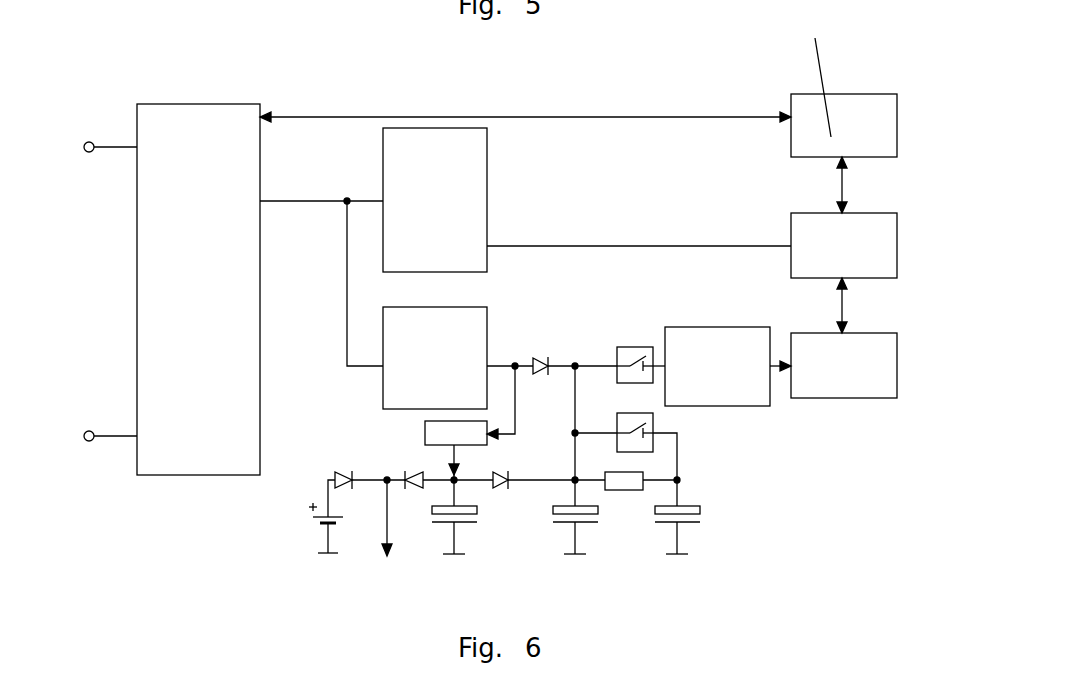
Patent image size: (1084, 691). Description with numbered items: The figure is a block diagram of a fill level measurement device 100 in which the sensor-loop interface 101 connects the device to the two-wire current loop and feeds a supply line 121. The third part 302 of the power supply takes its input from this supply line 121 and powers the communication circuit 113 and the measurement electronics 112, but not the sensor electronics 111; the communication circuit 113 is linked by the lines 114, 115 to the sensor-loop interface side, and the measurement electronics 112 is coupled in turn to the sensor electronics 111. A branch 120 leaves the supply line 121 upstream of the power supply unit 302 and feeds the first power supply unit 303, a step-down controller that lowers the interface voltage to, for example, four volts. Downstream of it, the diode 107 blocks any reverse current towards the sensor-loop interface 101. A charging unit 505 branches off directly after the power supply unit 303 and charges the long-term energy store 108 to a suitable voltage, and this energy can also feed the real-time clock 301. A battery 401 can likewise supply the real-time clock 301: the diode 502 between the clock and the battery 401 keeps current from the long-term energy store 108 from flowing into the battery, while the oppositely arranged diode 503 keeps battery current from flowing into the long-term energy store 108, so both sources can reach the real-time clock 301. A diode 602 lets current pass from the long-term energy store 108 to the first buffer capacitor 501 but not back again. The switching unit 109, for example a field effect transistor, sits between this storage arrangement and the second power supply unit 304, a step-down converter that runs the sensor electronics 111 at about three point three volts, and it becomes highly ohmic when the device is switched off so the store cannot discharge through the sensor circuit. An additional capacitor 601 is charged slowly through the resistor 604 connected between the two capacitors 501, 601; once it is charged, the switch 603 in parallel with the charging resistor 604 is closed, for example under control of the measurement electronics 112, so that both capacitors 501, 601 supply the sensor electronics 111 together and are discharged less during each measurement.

The sensor device 100 is at (724, 78).
The sensor-loop interface 101 is at (230, 467).
The diode 107 is at (548, 352).
The long-term energy store 108 is at (477, 510).
The switching unit 109 is at (637, 343).
The sensor electronics 111 is at (848, 393).
The measurement electronics 112 is at (800, 220).
The communication circuit 113 is at (848, 100).
The line 114 is at (525, 87).
The line 115 is at (305, 117).
The branch 120 is at (340, 288).
The supply line 121 is at (268, 201).
The real-time clock 301 is at (357, 572).
The third part of the power supply 302 is at (480, 162).
The first power supply unit 303 is at (480, 332).
The second power supply unit 304 is at (758, 400).
The battery 401 is at (322, 538).
The buffer capacitor 501 is at (600, 512).
The diode 502 is at (343, 472).
The diode 503 is at (403, 472).
The charging unit 505 is at (482, 440).
The additional capacitor 601 is at (700, 512).
The diode 602 is at (503, 488).
The switch 603 is at (655, 425).
The resistor 604 is at (612, 490).